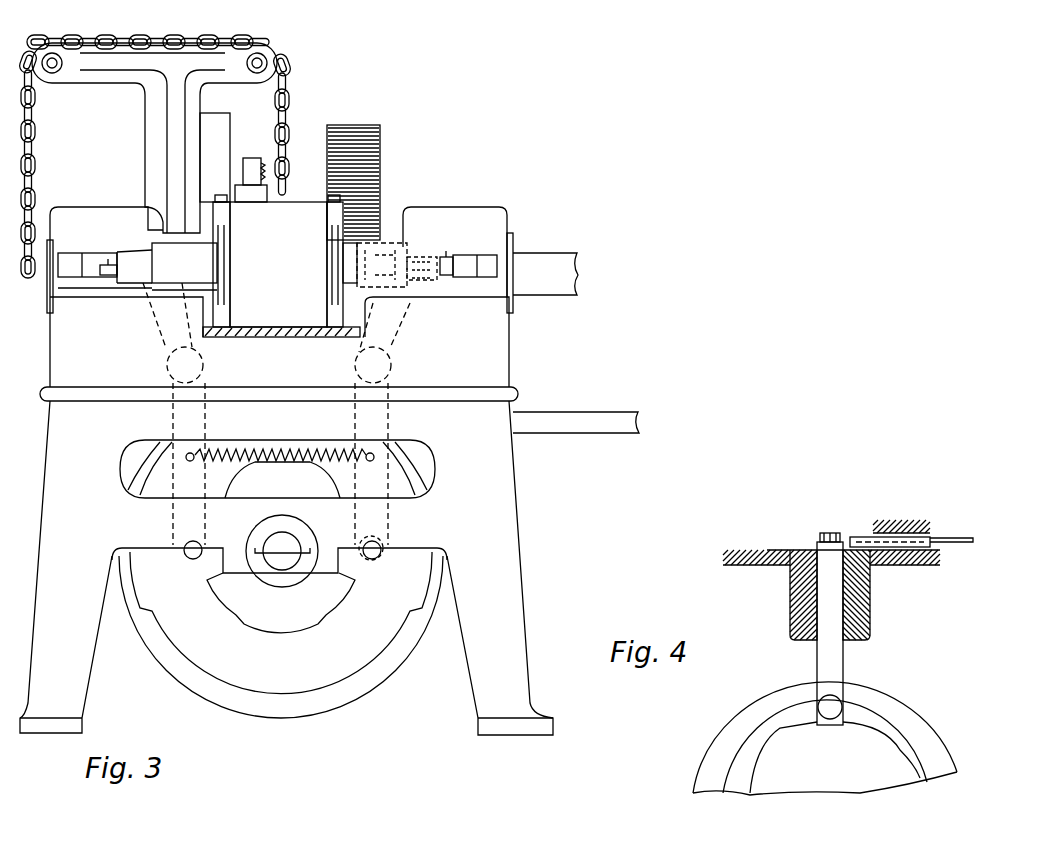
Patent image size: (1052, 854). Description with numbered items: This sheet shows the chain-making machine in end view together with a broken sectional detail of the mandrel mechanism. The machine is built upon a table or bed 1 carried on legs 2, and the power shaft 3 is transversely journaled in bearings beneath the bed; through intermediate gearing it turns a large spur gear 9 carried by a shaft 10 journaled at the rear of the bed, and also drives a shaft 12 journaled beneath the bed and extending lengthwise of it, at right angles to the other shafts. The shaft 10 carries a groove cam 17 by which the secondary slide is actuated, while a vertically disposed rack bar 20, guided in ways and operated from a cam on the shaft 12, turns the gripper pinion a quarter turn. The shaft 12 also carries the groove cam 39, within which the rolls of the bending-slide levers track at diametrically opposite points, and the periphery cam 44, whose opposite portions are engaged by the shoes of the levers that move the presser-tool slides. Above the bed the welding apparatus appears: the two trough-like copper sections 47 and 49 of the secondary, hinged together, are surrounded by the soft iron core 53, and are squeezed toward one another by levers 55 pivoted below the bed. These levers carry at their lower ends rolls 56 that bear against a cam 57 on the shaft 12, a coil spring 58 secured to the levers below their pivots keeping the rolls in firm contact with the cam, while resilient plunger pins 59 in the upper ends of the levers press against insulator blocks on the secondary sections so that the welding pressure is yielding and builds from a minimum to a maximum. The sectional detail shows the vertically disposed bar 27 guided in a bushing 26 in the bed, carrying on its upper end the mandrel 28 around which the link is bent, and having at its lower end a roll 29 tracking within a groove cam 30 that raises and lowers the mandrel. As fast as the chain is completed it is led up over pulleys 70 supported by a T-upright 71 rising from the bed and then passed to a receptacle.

In FIG. 3, the table or bed 1 is at (52, 296).
In FIG. 4, the table or bed 1 is at (781, 549).
In FIG. 3, the legs 2 is at (286, 568).
In FIG. 3, the power shaft 3 is at (569, 409).
In FIG. 3, the spur gear 9 is at (380, 152).
In FIG. 3, the shaft 10 is at (548, 254).
In FIG. 3, the shaft 12 is at (279, 551).
In FIG. 3, the groove cam 17 is at (215, 157).
In FIG. 3, the rack bar 20 is at (252, 158).
In FIG. 4, the bushing 26 is at (870, 615).
In FIG. 4, the bar 27 is at (816, 542).
In FIG. 4, the mandrel 28 is at (833, 532).
In FIG. 4, the roll 29 is at (843, 714).
In FIG. 3, the groove cam 30 is at (385, 672).
In FIG. 4, the groove cam 30 is at (897, 724).
In FIG. 3, the groove cam 39 is at (392, 640).
In FIG. 3, the periphery cam 44 is at (355, 644).
In FIG. 3, the secondary section 47 is at (392, 284).
In FIG. 3, the secondary section 49 is at (186, 270).
In FIG. 3, the soft iron core 53 is at (281, 266).
In FIG. 3, the levers 55 is at (143, 282).
In FIG. 3, the rolls 56 is at (190, 546).
In FIG. 3, the cam 57 is at (277, 469).
In FIG. 3, the coil spring 58 is at (268, 450).
In FIG. 3, the resilient plunger pins 59 is at (106, 262).
In FIG. 3, the pulleys 70 is at (56, 78).
In FIG. 3, the T-upright 71 is at (146, 148).